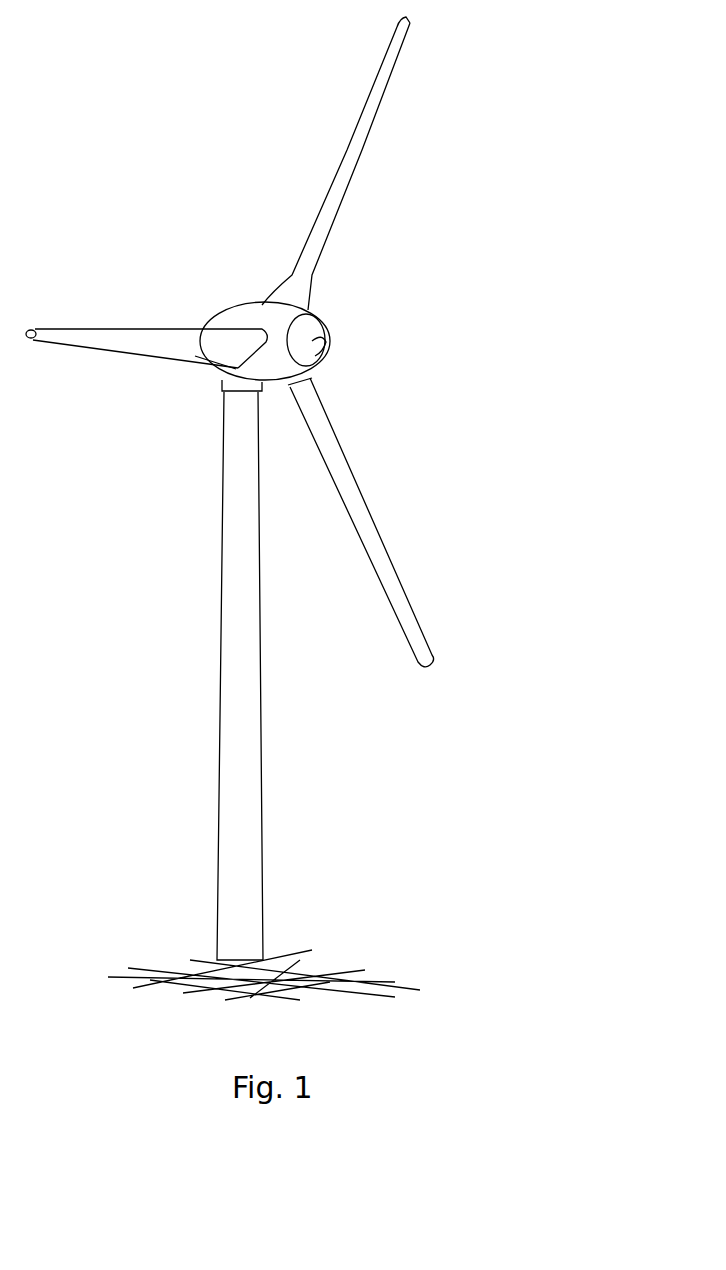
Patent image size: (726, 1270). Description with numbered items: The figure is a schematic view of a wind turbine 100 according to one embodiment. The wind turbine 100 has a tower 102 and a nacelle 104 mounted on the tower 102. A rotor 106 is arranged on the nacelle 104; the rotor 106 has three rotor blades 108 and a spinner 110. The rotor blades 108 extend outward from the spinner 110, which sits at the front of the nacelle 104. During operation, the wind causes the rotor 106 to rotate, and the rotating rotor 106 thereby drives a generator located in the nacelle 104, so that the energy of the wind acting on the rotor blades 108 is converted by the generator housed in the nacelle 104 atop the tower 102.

The wind turbine 100 is at (183, 456).
The tower 102 is at (247, 765).
The nacelle 104 is at (236, 316).
The rotor 106 is at (384, 271).
The rotor blades 108 is at (363, 128).
The spinner 110 is at (326, 343).